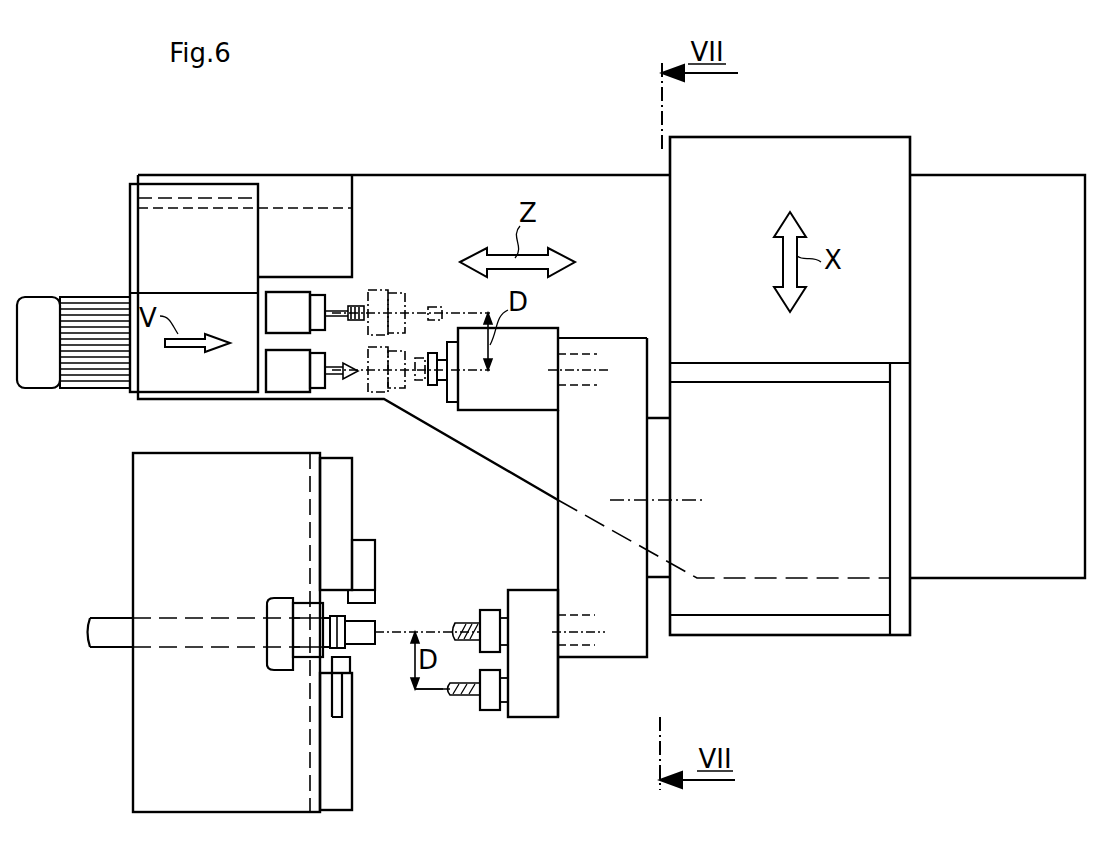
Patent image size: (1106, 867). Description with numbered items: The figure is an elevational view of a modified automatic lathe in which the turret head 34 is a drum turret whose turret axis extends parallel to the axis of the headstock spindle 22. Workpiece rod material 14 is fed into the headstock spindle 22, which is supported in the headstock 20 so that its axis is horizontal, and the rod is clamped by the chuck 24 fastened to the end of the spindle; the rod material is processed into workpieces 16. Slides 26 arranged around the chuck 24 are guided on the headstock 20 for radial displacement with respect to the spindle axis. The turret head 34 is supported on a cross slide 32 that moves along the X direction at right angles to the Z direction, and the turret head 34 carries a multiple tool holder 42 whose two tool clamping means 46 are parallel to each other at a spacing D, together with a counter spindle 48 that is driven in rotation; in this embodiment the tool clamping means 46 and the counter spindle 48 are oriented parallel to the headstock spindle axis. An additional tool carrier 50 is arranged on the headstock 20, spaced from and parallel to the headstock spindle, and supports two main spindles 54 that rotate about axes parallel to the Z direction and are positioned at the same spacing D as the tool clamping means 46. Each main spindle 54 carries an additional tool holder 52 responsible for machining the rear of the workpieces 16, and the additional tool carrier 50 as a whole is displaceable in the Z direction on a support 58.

The workpiece rod material 14 is at (112, 622).
The workpieces 16 is at (432, 385).
The headstock 20 is at (153, 762).
The headstock spindle 22 is at (297, 605).
The chuck 24 is at (365, 557).
The slides 26 is at (338, 507).
The cross slide 32 is at (893, 320).
The turret head 34 is at (652, 642).
The multiple tool holder 42 is at (535, 703).
The tool clamping means 46 is at (490, 615).
The counter spindle 48 is at (510, 390).
The additional tool carrier 50 is at (195, 383).
The additional tool holders 52 is at (320, 297).
The main spindles 54 is at (290, 300).
The support 58 is at (330, 205).